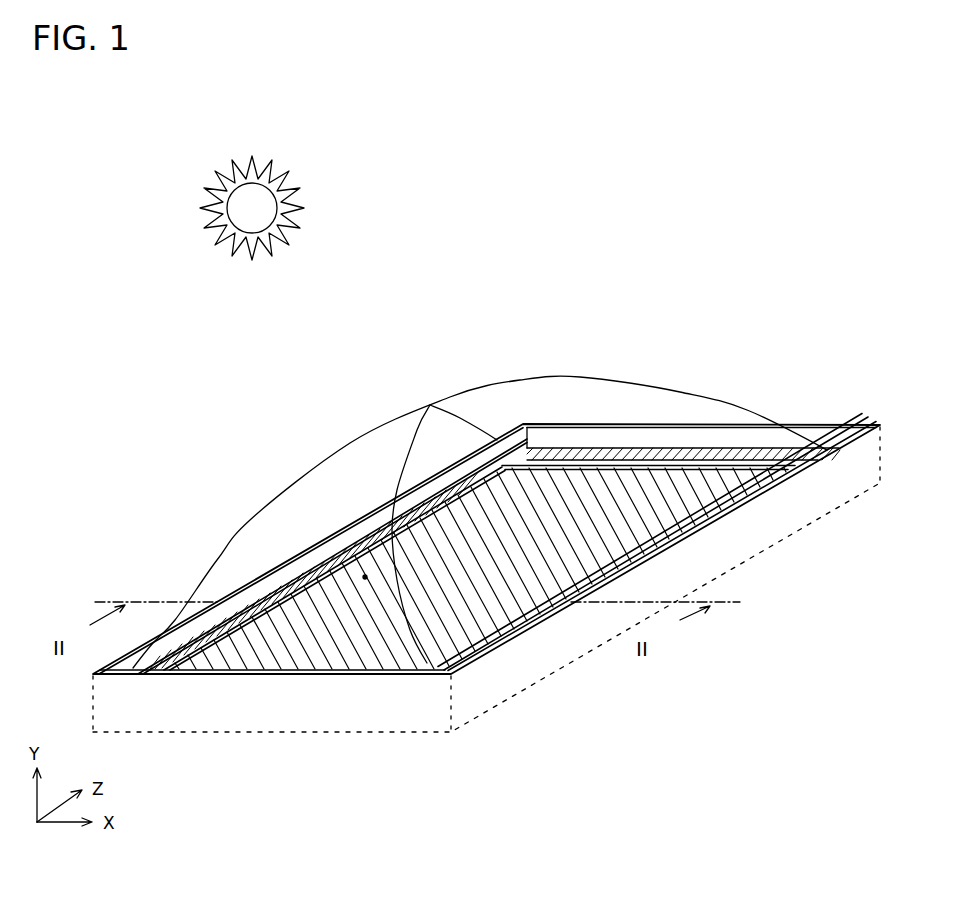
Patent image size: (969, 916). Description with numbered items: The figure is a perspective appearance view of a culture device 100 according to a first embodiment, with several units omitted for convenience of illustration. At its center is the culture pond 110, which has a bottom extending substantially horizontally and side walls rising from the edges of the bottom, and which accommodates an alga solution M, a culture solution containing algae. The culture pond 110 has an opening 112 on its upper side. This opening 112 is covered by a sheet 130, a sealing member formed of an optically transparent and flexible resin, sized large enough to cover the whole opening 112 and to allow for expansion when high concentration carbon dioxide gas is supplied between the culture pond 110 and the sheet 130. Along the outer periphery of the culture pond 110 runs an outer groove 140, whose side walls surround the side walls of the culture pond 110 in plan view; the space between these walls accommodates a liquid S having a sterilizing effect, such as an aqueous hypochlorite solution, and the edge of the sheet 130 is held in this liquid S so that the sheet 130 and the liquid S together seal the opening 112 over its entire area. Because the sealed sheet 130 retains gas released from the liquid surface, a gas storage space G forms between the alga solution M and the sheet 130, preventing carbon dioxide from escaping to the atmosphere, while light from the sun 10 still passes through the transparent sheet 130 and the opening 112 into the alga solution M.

The sun 10 is at (283, 178).
The culture device 100 is at (513, 293).
The culture pond 110 is at (716, 449).
The opening 112 is at (365, 577).
The sheet 130 is at (590, 378).
The outer groove 140 is at (832, 505).
The liquid S is at (292, 591).
The gas storage space G is at (527, 416).
The alga solution M is at (496, 588).